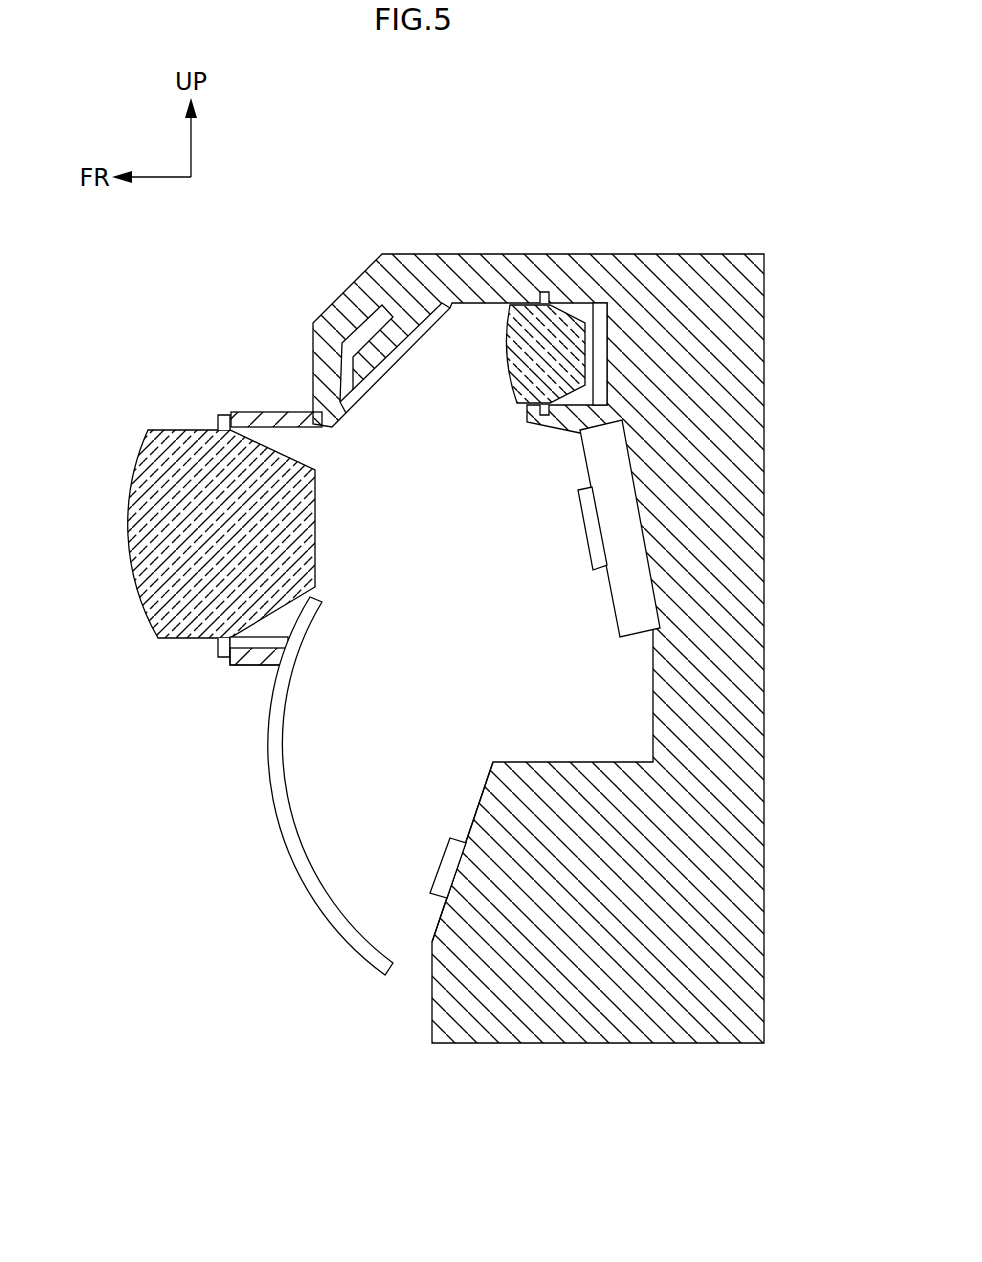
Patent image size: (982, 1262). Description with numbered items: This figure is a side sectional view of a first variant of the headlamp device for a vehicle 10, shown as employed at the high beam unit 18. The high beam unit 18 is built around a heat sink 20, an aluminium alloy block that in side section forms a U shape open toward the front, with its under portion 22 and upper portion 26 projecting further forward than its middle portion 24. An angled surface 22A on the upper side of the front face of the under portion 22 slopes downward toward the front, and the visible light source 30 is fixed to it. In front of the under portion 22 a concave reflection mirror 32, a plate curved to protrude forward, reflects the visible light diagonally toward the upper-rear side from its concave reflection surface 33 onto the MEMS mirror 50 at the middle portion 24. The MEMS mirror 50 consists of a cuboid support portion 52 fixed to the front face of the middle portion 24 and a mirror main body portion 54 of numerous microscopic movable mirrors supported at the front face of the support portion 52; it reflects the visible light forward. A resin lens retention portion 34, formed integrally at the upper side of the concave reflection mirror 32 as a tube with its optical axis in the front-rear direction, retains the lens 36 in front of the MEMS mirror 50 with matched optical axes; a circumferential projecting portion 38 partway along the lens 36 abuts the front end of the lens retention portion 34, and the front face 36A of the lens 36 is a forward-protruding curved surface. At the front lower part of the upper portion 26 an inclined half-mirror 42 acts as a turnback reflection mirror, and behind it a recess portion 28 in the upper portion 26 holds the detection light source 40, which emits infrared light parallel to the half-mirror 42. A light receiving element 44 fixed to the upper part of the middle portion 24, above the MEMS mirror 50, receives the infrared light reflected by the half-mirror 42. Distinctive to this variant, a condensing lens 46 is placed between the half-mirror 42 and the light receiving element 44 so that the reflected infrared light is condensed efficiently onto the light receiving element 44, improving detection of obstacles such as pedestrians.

The headlamp device for a vehicle 10 is at (490, 635).
The high beam unit 18 is at (537, 160).
The heat sink 20 is at (560, 661).
The under portion 22 is at (592, 1030).
The angled surface 22A is at (480, 812).
The middle portion 24 is at (755, 637).
The upper portion 26 is at (572, 254).
The recess portion 28 is at (390, 318).
The visible light source 30 is at (444, 868).
The concave reflection mirror 32 is at (280, 786).
The reflection surface 33 is at (272, 818).
The lens retention portion 34 is at (273, 410).
The lens 36 is at (174, 493).
The front face 36A is at (132, 522).
The projecting portion 38 is at (223, 413).
The detection light source 40 is at (334, 312).
The half-mirror 42 is at (394, 370).
The light receiving element 44 is at (594, 303).
The condensing lens 46 is at (508, 347).
The MEMS mirror 50 is at (583, 533).
The support portion 52 is at (622, 618).
The mirror main body portion 54 is at (578, 490).